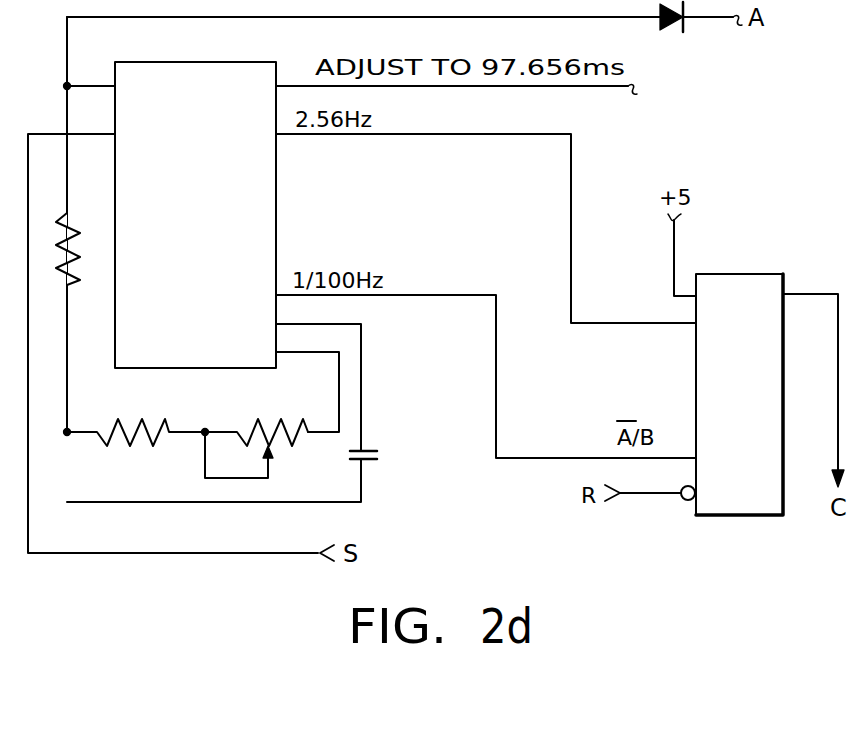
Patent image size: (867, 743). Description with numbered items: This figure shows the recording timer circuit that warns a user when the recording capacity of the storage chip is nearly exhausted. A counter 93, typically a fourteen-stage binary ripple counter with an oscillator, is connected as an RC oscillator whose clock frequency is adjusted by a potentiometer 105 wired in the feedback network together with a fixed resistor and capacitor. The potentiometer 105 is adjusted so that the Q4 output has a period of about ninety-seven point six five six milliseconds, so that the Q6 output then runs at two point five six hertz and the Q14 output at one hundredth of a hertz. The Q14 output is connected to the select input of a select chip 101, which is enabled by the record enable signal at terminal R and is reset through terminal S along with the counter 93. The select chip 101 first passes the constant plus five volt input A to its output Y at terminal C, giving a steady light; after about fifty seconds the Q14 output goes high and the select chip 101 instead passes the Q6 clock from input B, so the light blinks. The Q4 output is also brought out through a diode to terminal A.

The counter 93 is at (276, 187).
The potentiometer 105 is at (282, 420).
The select chip 101 is at (740, 273).